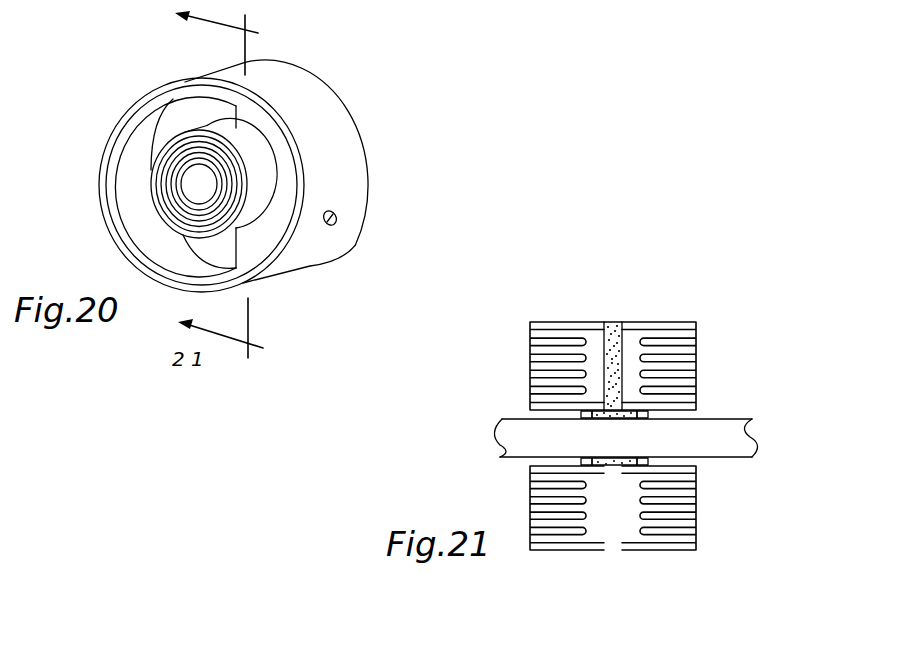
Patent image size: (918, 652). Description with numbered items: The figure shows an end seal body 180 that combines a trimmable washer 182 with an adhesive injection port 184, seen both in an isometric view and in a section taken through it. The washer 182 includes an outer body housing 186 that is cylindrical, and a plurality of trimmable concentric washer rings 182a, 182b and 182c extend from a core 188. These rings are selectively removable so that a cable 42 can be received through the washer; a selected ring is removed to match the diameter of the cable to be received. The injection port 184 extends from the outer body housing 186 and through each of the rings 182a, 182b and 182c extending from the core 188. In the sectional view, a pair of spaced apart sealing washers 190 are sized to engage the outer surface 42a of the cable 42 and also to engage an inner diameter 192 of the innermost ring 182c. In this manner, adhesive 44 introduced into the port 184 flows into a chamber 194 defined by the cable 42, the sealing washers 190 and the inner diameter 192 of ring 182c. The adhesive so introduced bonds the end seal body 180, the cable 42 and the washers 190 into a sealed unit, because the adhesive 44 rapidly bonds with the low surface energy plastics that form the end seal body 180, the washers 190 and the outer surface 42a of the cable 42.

In FIG. 20, the end seal body 180 is at (194, 56).
In FIG. 20, the trimmable washer 182 is at (362, 133).
In FIG. 20, the trimmable concentric washer ring 182a is at (171, 181).
In FIG. 21, the trimmable concentric washer ring 182a is at (698, 364).
In FIG. 20, the trimmable concentric washer ring 182b is at (168, 200).
In FIG. 21, the trimmable concentric washer ring 182b is at (698, 384).
In FIG. 20, the trimmable concentric washer ring 182c is at (183, 236).
In FIG. 21, the trimmable concentric washer ring 182c is at (698, 404).
In FIG. 20, the adhesive injection port 184 is at (326, 227).
In FIG. 21, the adhesive injection port 184 is at (614, 322).
In FIG. 20, the outer body housing 186 is at (322, 100).
In FIG. 21, the outer body housing 186 is at (553, 322).
In FIG. 20, the core 188 is at (185, 115).
In FIG. 21, the core 188 is at (582, 348).
In FIG. 21, the cable 42 is at (755, 432).
In FIG. 21, the outer surface 42a is at (515, 423).
In FIG. 21, the adhesive 44 is at (604, 345).
In FIG. 21, the sealing washers 190 is at (581, 462).
In FIG. 21, the inner diameter 192 is at (670, 415).
In FIG. 21, the chamber 194 is at (610, 466).